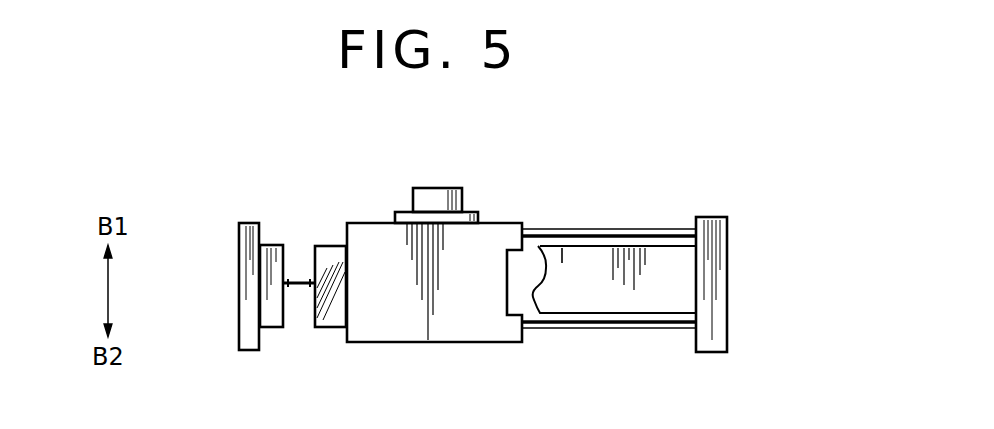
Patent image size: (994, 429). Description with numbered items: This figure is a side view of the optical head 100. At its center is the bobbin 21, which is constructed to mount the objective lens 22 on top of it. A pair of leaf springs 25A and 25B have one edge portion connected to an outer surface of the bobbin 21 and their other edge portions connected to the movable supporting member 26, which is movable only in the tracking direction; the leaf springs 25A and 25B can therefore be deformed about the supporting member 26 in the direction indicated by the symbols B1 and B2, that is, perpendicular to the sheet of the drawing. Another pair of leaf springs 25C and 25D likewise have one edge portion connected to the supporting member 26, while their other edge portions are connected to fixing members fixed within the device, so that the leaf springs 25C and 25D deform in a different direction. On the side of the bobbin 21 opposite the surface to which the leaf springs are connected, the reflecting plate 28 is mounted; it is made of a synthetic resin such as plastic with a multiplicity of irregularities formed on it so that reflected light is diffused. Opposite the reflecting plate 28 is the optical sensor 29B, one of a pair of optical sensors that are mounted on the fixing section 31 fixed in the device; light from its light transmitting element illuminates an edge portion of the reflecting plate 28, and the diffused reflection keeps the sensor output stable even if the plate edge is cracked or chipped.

The optical head 100 is at (730, 143).
The fixing section 31 is at (240, 277).
The optical sensor 29B is at (271, 328).
The reflecting plate 28 is at (329, 252).
The bobbin 21 is at (409, 332).
The objective lens 22 is at (430, 200).
The leaf spring 25A is at (618, 232).
The leaf spring 25B is at (588, 330).
The leaf spring 25C is at (555, 232).
The leaf spring 25D is at (657, 288).
The movable supporting member 26 is at (727, 287).